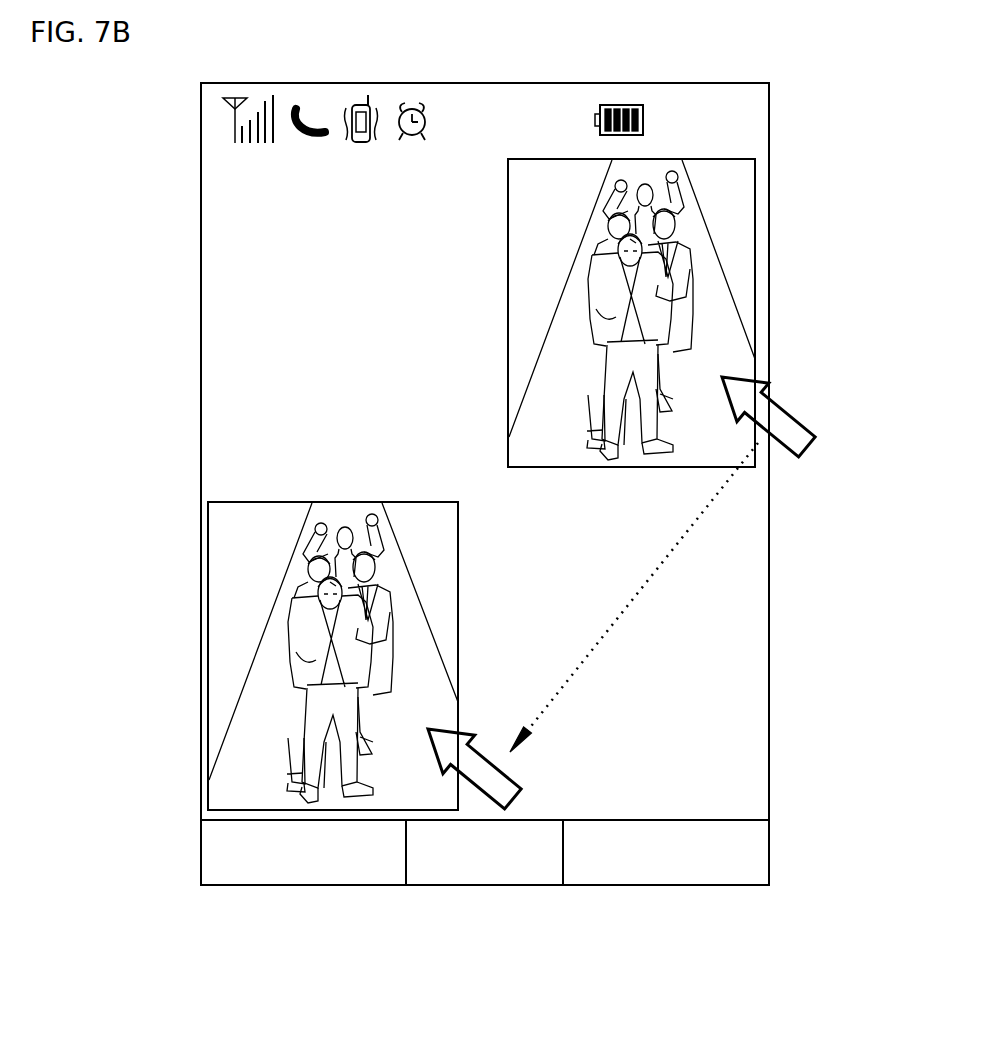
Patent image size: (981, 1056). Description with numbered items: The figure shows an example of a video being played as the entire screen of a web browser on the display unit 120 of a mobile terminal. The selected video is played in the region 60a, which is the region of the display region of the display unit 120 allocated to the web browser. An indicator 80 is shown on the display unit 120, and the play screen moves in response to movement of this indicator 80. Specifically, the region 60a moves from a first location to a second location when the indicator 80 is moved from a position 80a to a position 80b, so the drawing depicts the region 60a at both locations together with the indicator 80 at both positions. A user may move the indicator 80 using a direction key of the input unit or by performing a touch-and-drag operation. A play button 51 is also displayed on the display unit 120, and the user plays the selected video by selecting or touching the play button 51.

The display unit 120 is at (405, 543).
The region allocated to the web browser 60a is at (732, 285).
The indicator 80 is at (656, 576).
The first position 80a is at (768, 443).
The second position 80b is at (505, 762).
The play button 51 is at (463, 875).